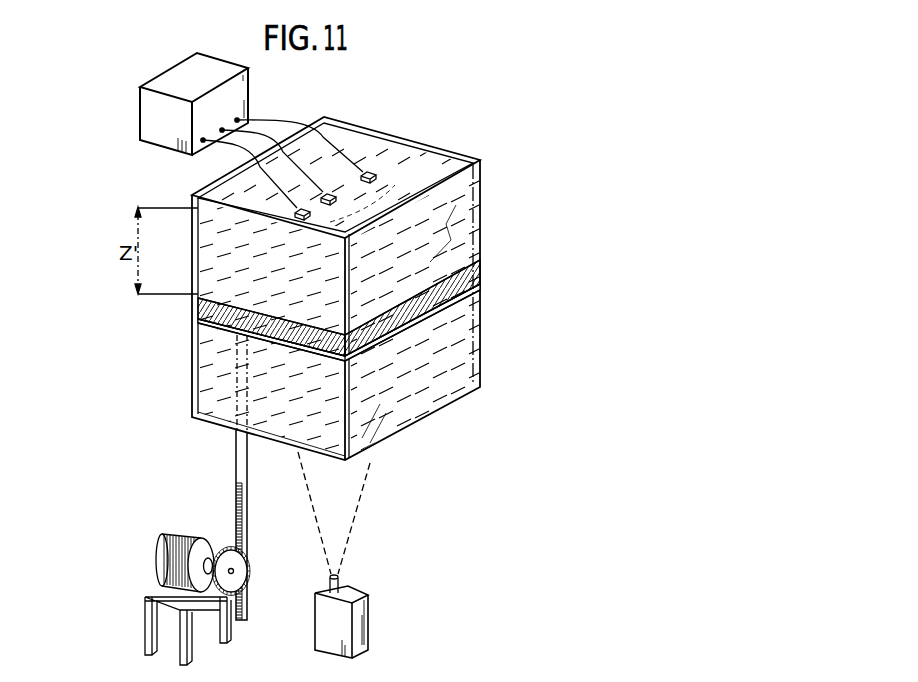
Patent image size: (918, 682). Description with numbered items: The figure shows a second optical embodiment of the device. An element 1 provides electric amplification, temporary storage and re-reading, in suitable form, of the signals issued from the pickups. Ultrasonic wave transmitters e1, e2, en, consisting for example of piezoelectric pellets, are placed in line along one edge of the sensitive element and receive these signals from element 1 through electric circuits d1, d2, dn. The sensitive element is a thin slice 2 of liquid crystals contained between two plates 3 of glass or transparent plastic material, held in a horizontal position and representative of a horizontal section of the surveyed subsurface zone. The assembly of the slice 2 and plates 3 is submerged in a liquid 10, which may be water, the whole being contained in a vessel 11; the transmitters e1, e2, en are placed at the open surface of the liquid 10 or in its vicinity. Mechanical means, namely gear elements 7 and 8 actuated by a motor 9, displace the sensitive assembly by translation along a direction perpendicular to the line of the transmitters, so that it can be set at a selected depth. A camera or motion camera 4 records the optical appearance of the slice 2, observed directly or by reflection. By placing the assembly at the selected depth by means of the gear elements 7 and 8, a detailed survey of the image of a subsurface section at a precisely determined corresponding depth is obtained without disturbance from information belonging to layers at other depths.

The element for electric amplification 1 is at (143, 120).
The thin slice of liquid crystals 2 is at (474, 283).
The plates 3 is at (472, 266).
The camera or motion camera 4 is at (368, 625).
The gear element 7 is at (233, 492).
The gear element 8 is at (227, 550).
The motor 9 is at (160, 550).
The liquid 10 is at (412, 363).
The vessel 11 is at (486, 213).
The electric circuit dn is at (345, 125).
The electric circuit d2 is at (330, 138).
The electric circuit d1 is at (305, 200).
The ultrasonic wave transmitter en is at (562, 95).
The ultrasonic wave transmitter e2 is at (415, 153).
The ultrasonic wave transmitter e1 is at (470, 150).